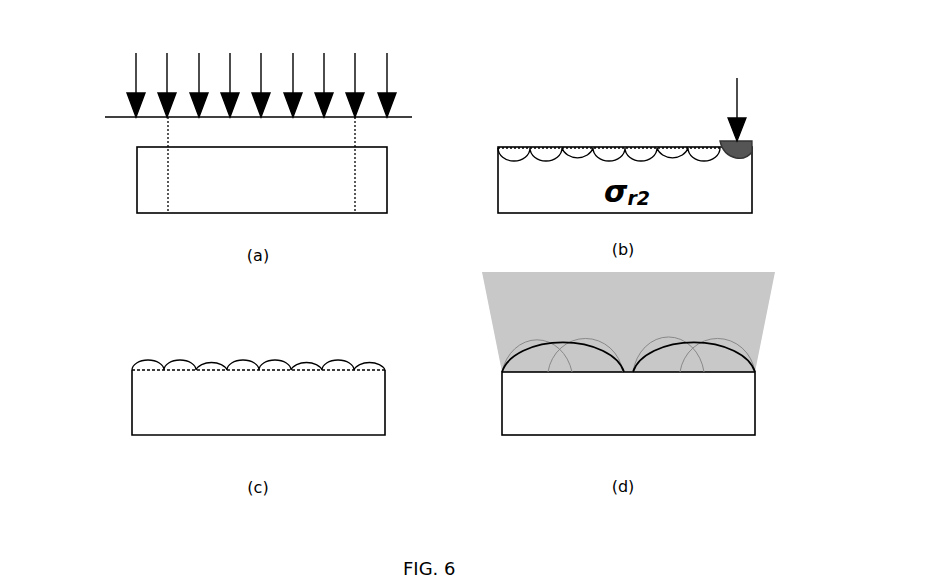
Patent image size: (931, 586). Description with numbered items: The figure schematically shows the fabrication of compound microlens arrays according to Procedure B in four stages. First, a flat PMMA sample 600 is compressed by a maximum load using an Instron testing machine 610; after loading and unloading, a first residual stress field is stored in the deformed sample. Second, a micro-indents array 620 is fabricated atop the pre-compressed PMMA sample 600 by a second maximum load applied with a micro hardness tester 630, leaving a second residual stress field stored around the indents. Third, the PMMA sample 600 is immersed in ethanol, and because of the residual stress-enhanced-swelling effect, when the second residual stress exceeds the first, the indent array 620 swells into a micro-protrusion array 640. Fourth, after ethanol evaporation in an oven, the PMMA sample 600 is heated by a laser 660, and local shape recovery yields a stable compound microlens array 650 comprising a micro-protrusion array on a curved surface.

The PMMA sample 600 is at (137, 157).
The Instron testing machine 610 is at (105, 117).
The micro-indents array 620 is at (790, 123).
The micro hardness tester 630 is at (747, 139).
The micro-protrusion array 640 is at (120, 345).
The compound microlens array 650 is at (787, 315).
The laser 660 is at (710, 272).